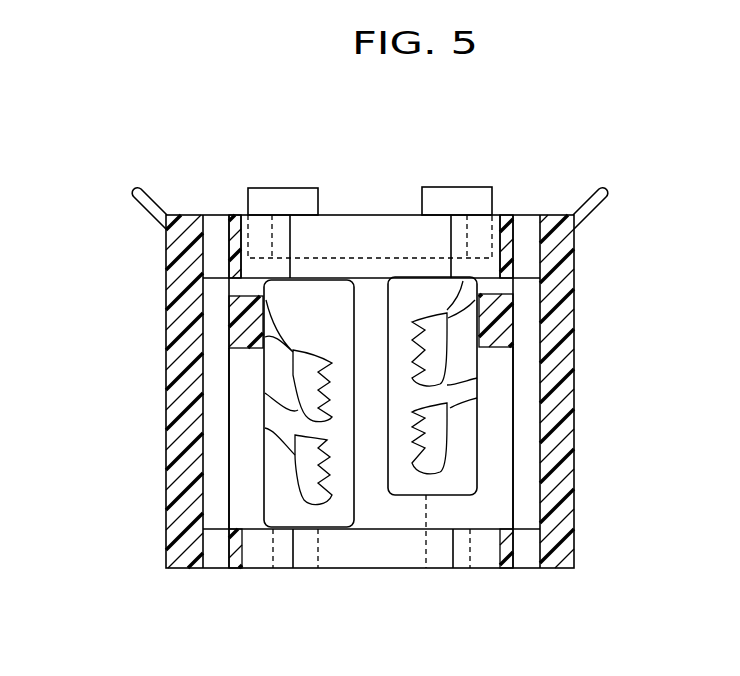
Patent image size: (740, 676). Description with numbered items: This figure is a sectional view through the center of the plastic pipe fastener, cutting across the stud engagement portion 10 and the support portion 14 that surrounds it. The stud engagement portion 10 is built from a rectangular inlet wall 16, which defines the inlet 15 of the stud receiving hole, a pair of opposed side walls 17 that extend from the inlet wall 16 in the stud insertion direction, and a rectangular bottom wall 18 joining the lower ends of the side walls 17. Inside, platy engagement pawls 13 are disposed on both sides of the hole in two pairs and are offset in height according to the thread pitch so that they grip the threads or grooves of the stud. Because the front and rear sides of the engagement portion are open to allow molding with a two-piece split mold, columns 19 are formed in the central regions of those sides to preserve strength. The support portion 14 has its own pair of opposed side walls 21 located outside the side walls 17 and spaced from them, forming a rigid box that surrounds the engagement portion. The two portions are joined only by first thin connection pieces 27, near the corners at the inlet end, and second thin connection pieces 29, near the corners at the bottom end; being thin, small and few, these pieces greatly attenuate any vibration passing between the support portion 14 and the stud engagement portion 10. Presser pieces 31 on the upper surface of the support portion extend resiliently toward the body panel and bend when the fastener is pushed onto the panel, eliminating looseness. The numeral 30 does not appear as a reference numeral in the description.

The stud engagement portion 10 is at (522, 461).
The engagement pawls 13 is at (428, 323).
The support portion 14 is at (165, 468).
The inlet 15 is at (315, 278).
The inlet wall 16 is at (412, 228).
The side walls 17 is at (243, 398).
The bottom wall 18 is at (392, 545).
The columns 19 is at (360, 457).
The side walls 21 is at (168, 285).
The first thin connection pieces 27 is at (233, 216).
The second thin connection pieces 29 is at (262, 552).
The insulating spacer 30 is at (237, 323).
The presser pieces 31 is at (137, 197).